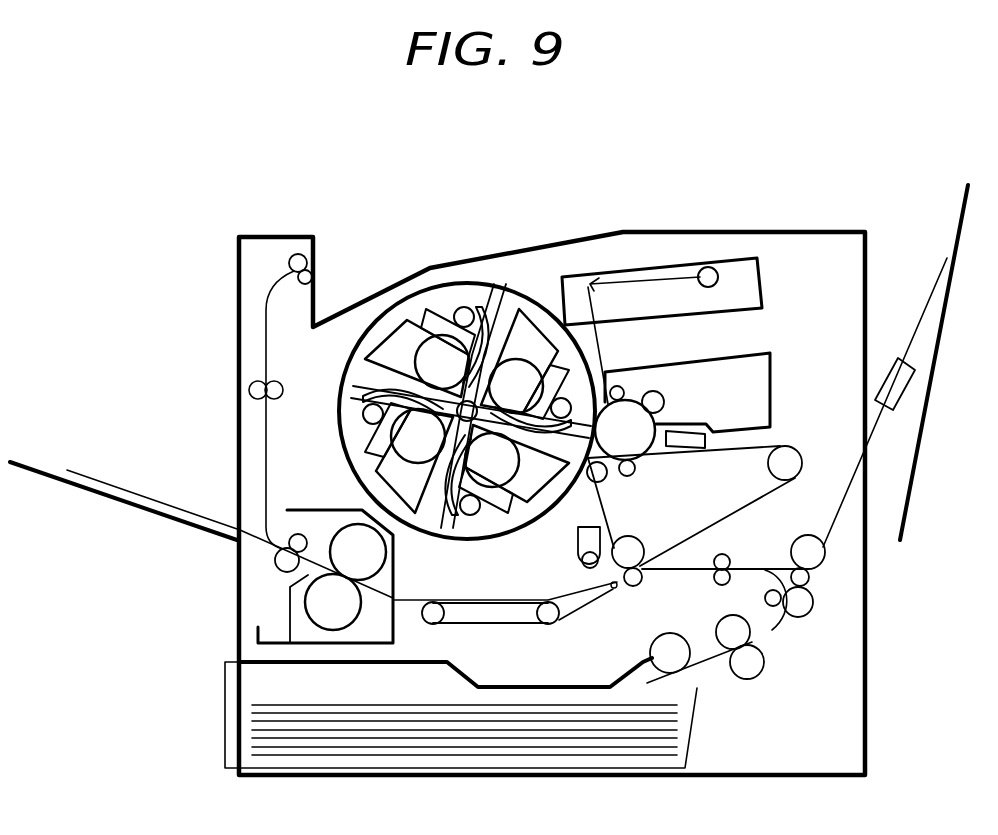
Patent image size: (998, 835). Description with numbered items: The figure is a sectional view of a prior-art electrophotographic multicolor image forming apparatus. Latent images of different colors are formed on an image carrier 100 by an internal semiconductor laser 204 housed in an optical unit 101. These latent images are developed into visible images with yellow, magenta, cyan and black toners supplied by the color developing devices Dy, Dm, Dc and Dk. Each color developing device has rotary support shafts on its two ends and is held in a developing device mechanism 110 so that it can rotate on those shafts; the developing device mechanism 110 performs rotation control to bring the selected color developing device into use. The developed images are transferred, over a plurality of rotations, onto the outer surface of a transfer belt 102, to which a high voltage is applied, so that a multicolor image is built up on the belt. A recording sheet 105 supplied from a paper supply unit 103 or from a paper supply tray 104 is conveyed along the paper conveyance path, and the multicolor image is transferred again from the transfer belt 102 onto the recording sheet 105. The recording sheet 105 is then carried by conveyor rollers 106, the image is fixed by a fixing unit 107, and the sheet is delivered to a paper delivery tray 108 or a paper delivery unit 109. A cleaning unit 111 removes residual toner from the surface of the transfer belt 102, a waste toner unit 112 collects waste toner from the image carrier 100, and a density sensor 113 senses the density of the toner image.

The image carrier 100 is at (632, 397).
The optical unit 101 is at (612, 278).
The transfer belt 102 is at (764, 447).
The paper supply unit 103 is at (688, 730).
The paper supply tray 104 is at (930, 318).
The recording sheet 105 is at (772, 630).
The conveyor rollers 106 is at (497, 625).
The fixing unit 107 is at (300, 510).
The paper delivery tray 108 is at (178, 508).
The paper delivery unit 109 is at (298, 237).
The developing device mechanism 110 is at (441, 380).
The cleaning unit 111 is at (578, 543).
The waste toner unit 112 is at (757, 352).
The density sensor 113 is at (690, 428).
The semiconductor laser 204 is at (709, 266).
The magenta color developing device Dm is at (413, 312).
The yellow color developing device Dy is at (537, 312).
The cyan color developing device Dc is at (362, 433).
The black color developing device Dk is at (495, 520).